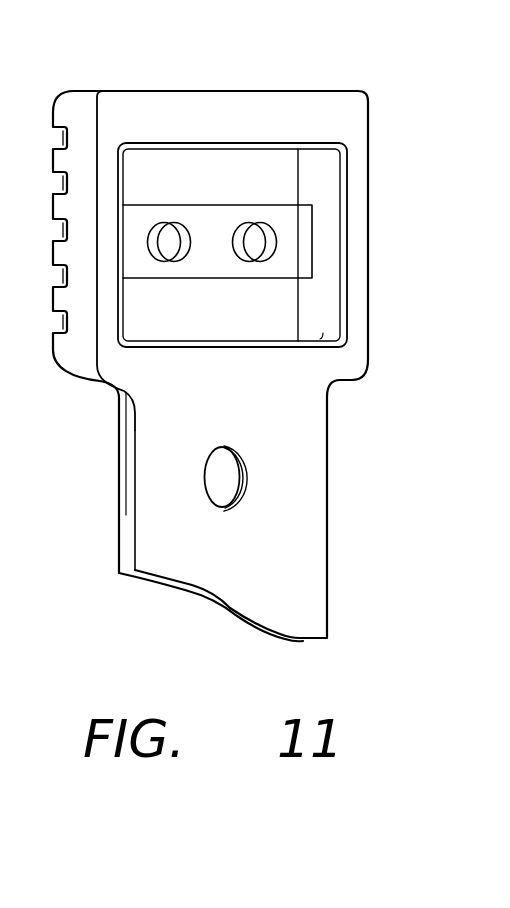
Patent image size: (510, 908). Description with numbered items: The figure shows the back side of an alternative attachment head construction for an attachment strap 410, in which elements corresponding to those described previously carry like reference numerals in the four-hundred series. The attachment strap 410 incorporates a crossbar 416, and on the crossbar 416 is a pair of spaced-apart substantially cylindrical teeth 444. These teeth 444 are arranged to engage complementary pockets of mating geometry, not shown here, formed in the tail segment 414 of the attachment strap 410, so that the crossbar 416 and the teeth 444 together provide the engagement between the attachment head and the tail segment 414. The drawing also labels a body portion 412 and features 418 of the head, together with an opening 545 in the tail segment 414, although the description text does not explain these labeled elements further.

The attachment strap 410 is at (220, 320).
The housing body 412 is at (220, 218).
The tail segment 414 is at (259, 516).
The crossbar 416 is at (158, 280).
The gripping ribs 418 is at (73, 165).
The cylindrical teeth 444 is at (258, 228).
The mounting hole 545 is at (250, 472).